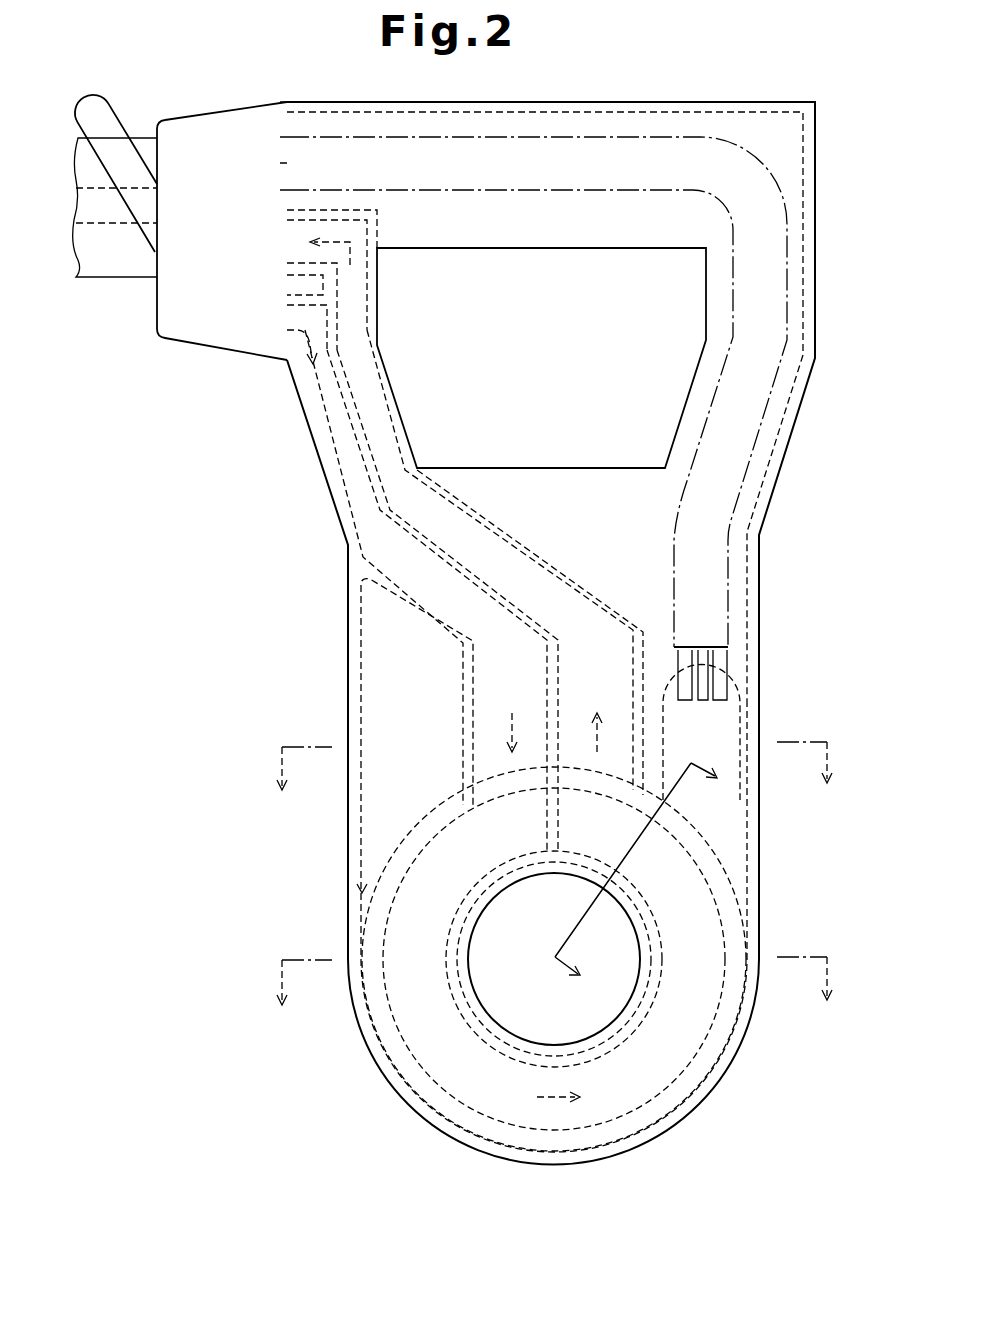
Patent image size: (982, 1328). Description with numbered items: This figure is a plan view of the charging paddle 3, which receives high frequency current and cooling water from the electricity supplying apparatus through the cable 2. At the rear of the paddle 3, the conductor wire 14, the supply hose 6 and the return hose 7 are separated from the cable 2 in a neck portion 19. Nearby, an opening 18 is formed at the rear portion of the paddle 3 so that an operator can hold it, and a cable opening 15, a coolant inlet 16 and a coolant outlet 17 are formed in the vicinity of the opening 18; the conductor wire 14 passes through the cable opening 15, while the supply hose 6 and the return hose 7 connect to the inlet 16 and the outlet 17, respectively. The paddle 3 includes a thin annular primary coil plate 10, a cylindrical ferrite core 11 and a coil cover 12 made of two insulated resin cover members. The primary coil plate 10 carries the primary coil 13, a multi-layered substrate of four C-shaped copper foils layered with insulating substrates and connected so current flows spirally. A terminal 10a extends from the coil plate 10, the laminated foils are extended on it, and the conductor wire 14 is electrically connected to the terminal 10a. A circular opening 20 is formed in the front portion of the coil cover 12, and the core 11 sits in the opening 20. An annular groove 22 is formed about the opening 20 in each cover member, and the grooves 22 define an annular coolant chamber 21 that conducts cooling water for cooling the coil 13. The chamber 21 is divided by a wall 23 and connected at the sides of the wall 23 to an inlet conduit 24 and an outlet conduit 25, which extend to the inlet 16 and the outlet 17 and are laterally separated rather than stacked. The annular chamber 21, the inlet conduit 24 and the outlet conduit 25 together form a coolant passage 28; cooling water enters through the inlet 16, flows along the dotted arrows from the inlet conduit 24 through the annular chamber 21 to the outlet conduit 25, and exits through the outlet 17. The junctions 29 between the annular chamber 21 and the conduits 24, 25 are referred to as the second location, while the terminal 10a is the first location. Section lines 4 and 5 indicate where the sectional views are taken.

The cable 2 is at (92, 278).
The charging paddle 3 is at (783, 78).
The section line 4- 4 is at (637, 871).
The section line 5- 5 is at (554, 784).
The supply hose 6 is at (102, 212).
The return hose 7 is at (110, 117).
The primary coil plate 10 is at (757, 867).
The terminal 10a is at (723, 803).
The ferrite core 11 is at (637, 988).
The coil cover 12 is at (759, 712).
The primary coil 13 is at (753, 927).
The conductor wire 14 is at (528, 176).
The cable opening 15 is at (287, 163).
The coolant inlet 16 is at (287, 317).
The coolant outlet 17 is at (287, 238).
The opening 18 is at (398, 403).
The neck portion 19 is at (214, 122).
The circular opening 20 is at (476, 967).
The annular coolant chamber 21 is at (664, 1077).
The annular groove 22 is at (700, 1047).
The wall 23 is at (558, 818).
The inlet conduit 24 is at (493, 682).
The outlet conduit 25 is at (588, 630).
The coolant passage 28 is at (525, 572).
The junctions 29 is at (578, 792).